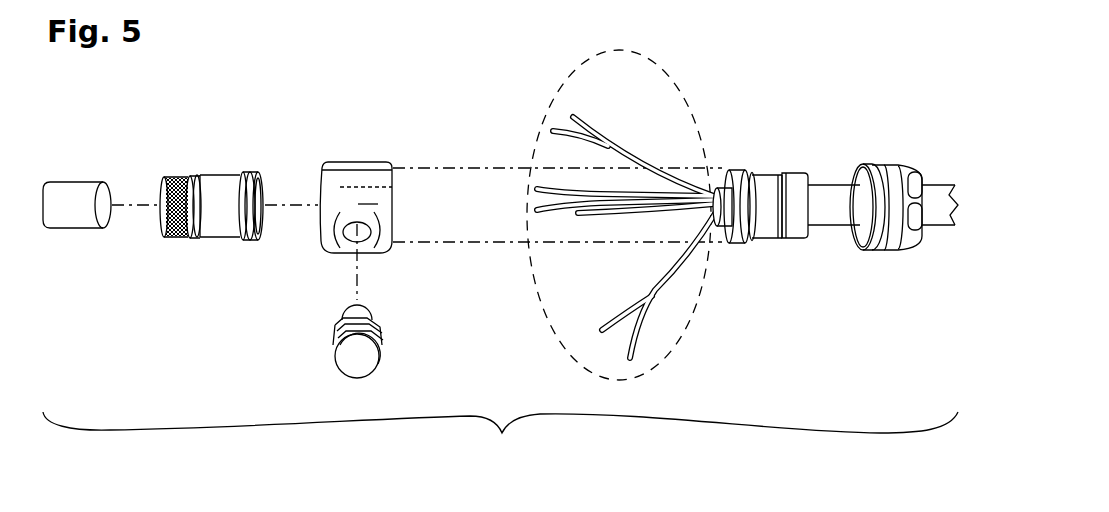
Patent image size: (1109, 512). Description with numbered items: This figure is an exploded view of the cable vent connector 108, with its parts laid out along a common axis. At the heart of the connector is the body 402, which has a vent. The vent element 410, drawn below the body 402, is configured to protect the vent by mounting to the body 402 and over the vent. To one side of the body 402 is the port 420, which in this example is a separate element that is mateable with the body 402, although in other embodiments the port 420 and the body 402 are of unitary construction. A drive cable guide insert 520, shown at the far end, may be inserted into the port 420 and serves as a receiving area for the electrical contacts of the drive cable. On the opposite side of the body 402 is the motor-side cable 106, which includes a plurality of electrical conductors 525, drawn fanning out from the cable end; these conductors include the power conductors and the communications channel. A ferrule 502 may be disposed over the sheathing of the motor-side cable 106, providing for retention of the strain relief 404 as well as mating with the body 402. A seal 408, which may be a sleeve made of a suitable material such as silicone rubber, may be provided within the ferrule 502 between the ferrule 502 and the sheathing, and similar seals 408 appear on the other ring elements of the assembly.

The cable vent connector 108 is at (227, 363).
The drive cable guide insert 520 is at (72, 192).
The port 420 is at (218, 212).
The seal 408 is at (254, 176).
The body 402 is at (332, 180).
The vent element 410 is at (362, 357).
The electrical conductors 525 is at (678, 342).
The ferrule 502 is at (753, 172).
The motor-side cable 106 is at (953, 216).
The strain relief 404 is at (897, 168).